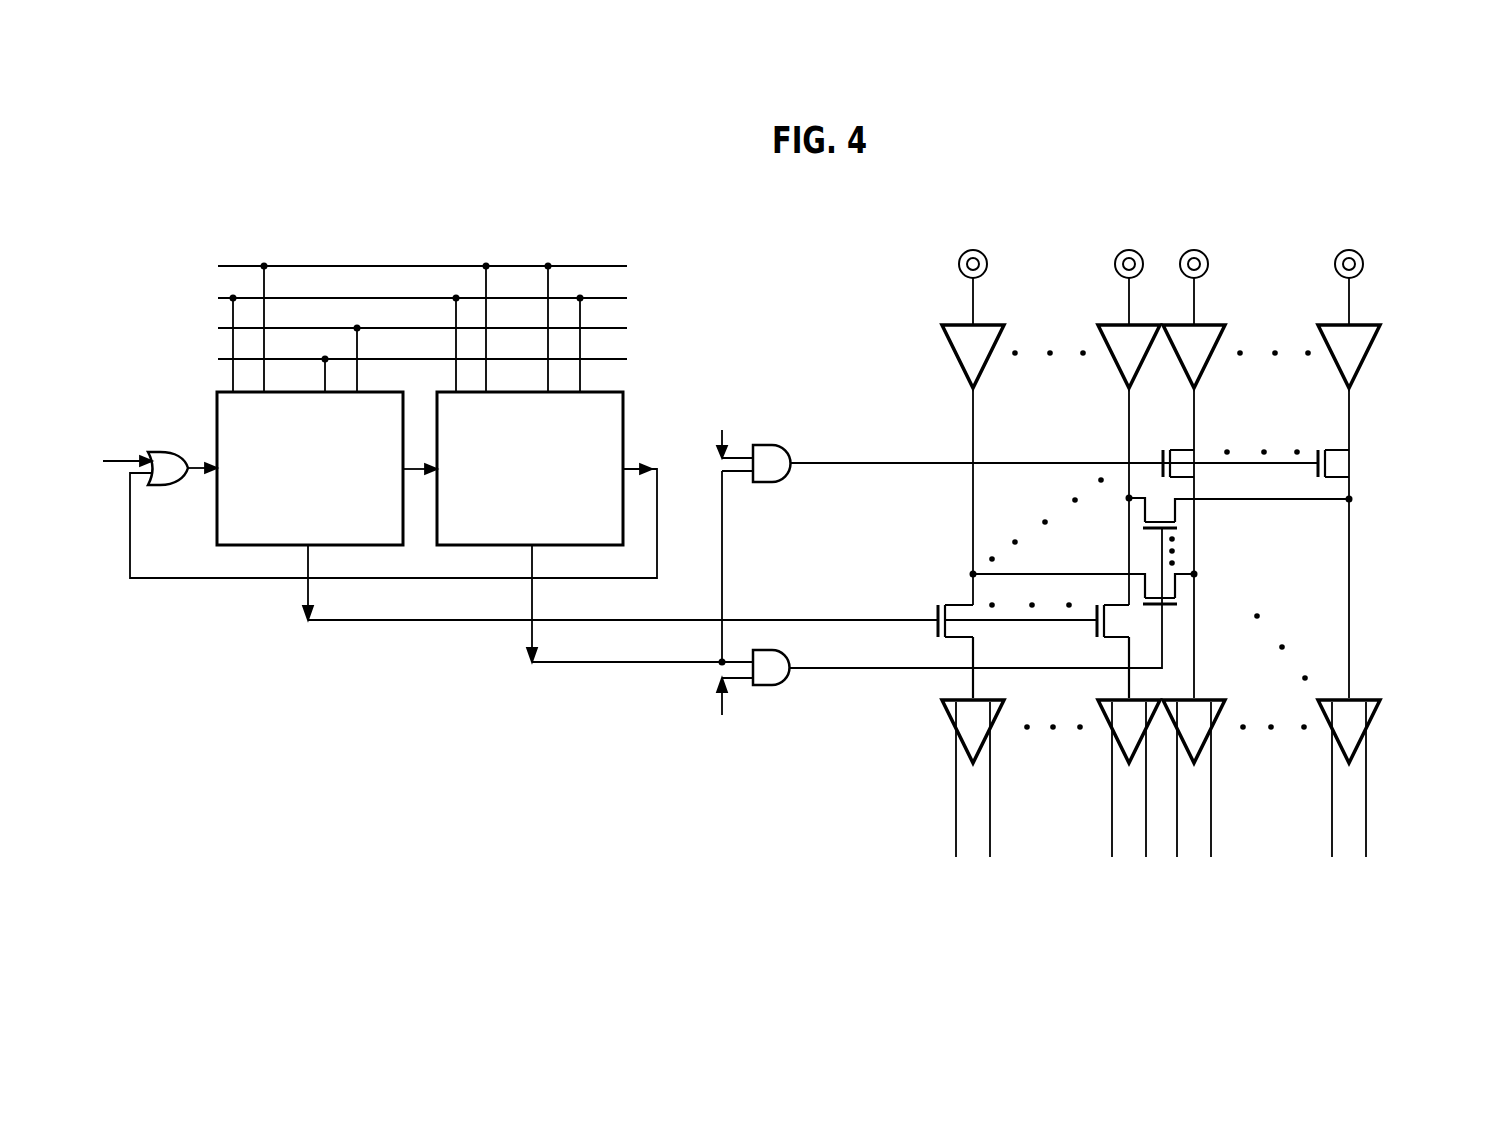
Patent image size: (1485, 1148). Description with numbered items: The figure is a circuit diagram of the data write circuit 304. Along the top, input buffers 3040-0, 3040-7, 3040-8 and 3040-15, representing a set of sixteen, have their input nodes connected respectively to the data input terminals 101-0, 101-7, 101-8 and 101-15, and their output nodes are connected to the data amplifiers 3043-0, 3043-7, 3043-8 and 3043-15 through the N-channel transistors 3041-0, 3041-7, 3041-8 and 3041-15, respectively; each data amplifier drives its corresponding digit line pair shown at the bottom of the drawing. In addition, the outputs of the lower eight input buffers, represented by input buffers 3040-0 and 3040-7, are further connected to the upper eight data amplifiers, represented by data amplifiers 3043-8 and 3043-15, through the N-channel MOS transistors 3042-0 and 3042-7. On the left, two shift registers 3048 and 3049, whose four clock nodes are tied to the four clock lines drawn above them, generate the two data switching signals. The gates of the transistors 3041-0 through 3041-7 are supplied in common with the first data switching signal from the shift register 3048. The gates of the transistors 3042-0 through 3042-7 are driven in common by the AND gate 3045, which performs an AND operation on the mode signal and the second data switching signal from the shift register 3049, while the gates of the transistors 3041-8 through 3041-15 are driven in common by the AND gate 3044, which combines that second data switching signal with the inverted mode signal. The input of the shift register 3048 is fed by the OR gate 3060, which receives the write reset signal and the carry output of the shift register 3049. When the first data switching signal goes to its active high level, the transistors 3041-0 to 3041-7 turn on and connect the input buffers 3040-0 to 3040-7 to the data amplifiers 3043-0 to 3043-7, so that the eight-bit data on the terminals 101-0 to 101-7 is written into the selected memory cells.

The data write circuit 304 is at (645, 716).
The shift register 3048 is at (217, 445).
The shift register 3049 is at (623, 432).
The OR gate 3060 is at (172, 480).
The AND gate 3044 is at (780, 447).
The AND gate 3045 is at (788, 663).
The data input terminal 101-0 is at (976, 250).
The data input terminal 101-7 is at (1130, 250).
The data input terminal 101-8 is at (1195, 250).
The data input terminal 101-15 is at (1349, 250).
The input buffer 3040-0 is at (940, 326).
The input buffer 3040-7 is at (1112, 327).
The input buffer 3040-8 is at (1205, 332).
The input buffer 3040-15 is at (1365, 335).
The N-channel transistor 3041-0 is at (962, 606).
The N-channel transistor 3041-7 is at (1093, 632).
The N-channel transistor 3041-8 is at (1188, 457).
The N-channel transistor 3041-15 is at (1348, 455).
The N-channel MOS transistor 3042-0 is at (1165, 586).
The N-channel MOS transistor 3042-7 is at (1165, 514).
The data amplifier 3043-0 is at (953, 716).
The data amplifier 3043-7 is at (1113, 720).
The data amplifier 3043-8 is at (1210, 722).
The data amplifier 3043-15 is at (1362, 722).